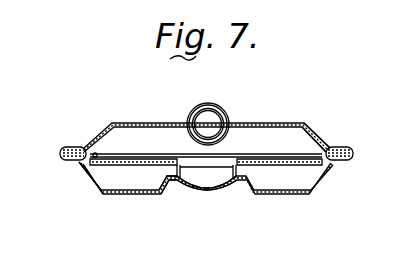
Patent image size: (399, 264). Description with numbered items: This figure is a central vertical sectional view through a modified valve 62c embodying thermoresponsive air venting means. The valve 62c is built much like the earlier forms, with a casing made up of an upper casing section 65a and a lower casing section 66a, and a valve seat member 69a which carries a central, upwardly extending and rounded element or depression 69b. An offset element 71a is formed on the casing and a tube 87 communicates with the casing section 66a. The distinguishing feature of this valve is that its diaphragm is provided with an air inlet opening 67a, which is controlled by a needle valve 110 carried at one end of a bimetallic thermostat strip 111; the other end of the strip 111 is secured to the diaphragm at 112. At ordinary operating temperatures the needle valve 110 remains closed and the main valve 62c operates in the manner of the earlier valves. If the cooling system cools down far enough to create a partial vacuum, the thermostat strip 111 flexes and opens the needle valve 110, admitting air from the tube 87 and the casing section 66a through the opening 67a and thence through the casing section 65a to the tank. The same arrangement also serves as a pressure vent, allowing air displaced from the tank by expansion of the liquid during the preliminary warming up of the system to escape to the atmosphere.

The valve 62c is at (273, 122).
The upper casing section 65a is at (294, 192).
The lower casing section 66a is at (313, 135).
The air inlet opening 67a is at (92, 178).
The valve seat member 69a is at (167, 192).
The rounded element or depression 69b is at (212, 188).
The offset element 71a is at (214, 105).
The tube 87 is at (188, 122).
The needle valve 110 is at (76, 166).
The bimetallic thermostat strip 111 is at (111, 151).
The securing point 112 is at (334, 163).